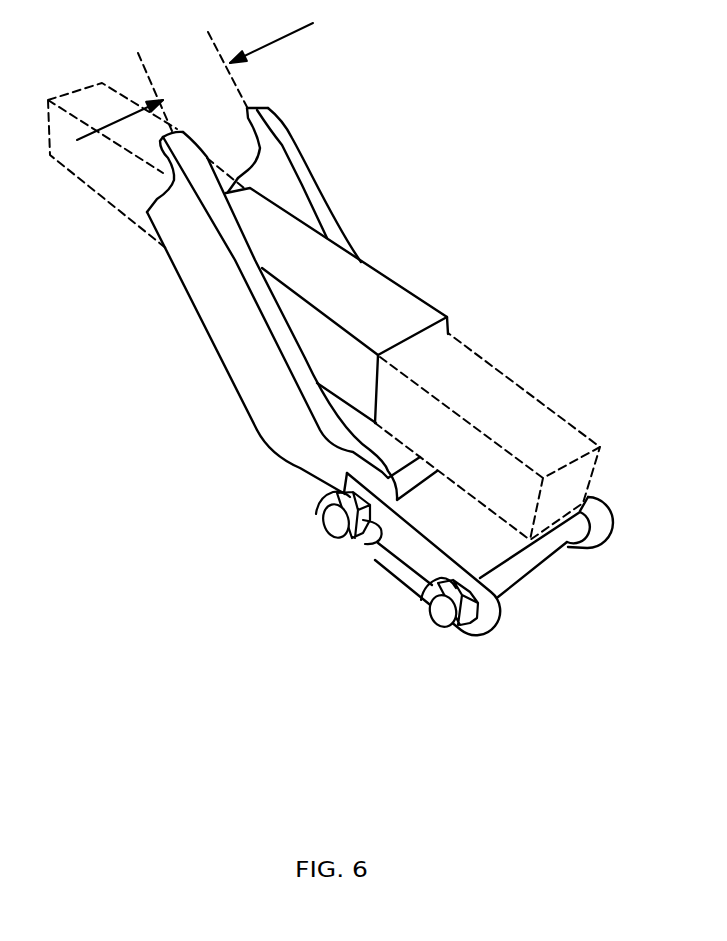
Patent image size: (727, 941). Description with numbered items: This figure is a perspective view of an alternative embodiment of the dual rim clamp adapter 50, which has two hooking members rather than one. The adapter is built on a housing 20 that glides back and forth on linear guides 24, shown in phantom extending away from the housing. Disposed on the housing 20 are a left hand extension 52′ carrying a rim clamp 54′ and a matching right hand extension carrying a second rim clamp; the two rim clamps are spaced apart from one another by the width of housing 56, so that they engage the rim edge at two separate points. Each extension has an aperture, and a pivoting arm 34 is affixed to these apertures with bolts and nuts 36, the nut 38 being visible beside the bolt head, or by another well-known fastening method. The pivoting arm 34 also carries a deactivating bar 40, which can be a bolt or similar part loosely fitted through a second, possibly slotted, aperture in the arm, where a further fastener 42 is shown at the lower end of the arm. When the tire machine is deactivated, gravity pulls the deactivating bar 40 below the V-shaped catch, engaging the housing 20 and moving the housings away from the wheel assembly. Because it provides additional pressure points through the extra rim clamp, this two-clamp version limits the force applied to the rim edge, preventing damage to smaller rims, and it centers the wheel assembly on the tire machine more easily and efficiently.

The housing 20 is at (427, 301).
The linear guides 24 is at (538, 400).
The pivoting arm 34 is at (397, 581).
The bolts and nuts 36 is at (323, 529).
The washer / flange 38 is at (367, 550).
The deactivating bar 40 is at (517, 582).
The bolt 42 is at (429, 603).
The dual rim clamp adapter 50 is at (497, 163).
The left hand extension 52′ is at (206, 325).
The rim clamp 54′ is at (164, 164).
The housing width 56 is at (180, 136).